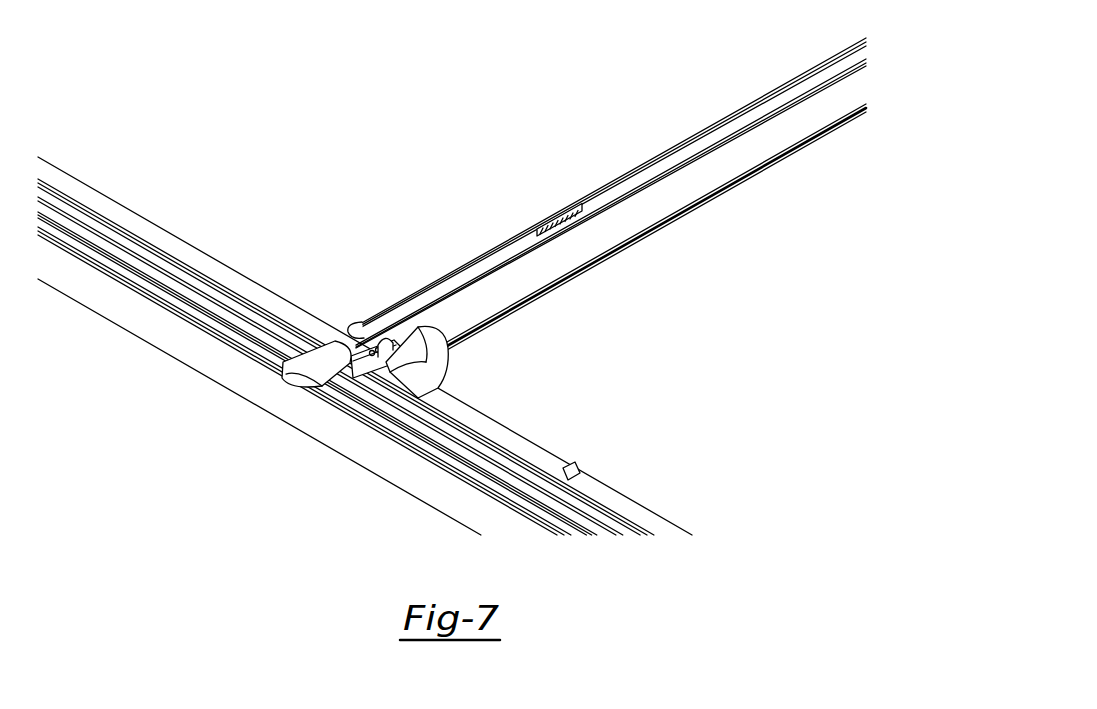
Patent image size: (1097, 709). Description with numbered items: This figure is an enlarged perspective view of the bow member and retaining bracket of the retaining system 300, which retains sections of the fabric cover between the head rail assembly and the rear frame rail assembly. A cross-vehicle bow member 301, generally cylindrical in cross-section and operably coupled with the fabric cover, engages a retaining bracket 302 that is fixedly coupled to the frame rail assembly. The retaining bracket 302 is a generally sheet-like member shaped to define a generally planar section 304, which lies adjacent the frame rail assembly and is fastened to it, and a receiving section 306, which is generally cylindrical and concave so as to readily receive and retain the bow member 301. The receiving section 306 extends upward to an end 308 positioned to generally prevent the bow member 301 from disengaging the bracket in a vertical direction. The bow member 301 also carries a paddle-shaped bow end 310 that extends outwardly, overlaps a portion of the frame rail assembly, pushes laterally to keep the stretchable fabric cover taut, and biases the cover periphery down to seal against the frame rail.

The retaining system 300 is at (452, 286).
The vehicle bow member 301 is at (600, 187).
The retaining bracket 302 is at (540, 445).
The planar section 304 is at (578, 466).
The receiving section 306 is at (428, 370).
The end 308 is at (438, 330).
The paddle-shaped bow end 310 is at (310, 374).